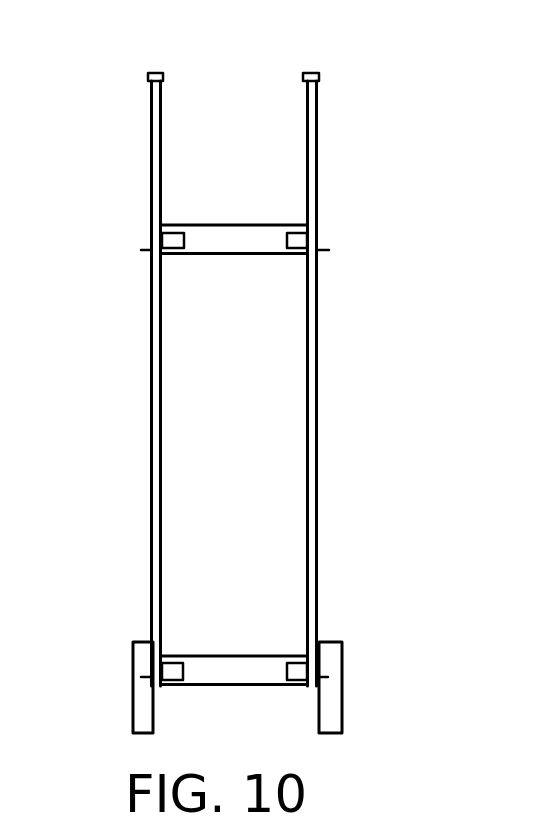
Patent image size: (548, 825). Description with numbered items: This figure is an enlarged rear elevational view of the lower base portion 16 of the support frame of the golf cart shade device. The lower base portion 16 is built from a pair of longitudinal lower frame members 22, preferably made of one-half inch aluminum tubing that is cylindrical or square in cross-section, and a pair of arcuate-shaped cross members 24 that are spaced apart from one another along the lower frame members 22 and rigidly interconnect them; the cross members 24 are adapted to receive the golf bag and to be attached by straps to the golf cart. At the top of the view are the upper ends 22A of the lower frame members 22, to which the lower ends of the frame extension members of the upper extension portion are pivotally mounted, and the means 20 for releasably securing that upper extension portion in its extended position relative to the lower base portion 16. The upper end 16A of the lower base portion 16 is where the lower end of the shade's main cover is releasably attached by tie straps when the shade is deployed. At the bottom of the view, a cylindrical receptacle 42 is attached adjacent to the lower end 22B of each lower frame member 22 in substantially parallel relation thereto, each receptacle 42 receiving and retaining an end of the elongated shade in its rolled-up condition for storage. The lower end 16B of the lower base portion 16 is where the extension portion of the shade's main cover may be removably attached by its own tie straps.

The lower base portion 16 is at (101, 279).
The upper end of the lower base portion 16A is at (318, 121).
The lower end of the lower base portion 16B is at (155, 657).
The means for releasably securing the upper extension portion 20 is at (302, 60).
The lower frame members 22 is at (295, 480).
The upper ends of the lower frame members 22A is at (310, 110).
The lower end of each lower frame member 22B is at (310, 670).
The cross members 24 is at (232, 257).
The cylindrical receptacles 42 is at (130, 703).